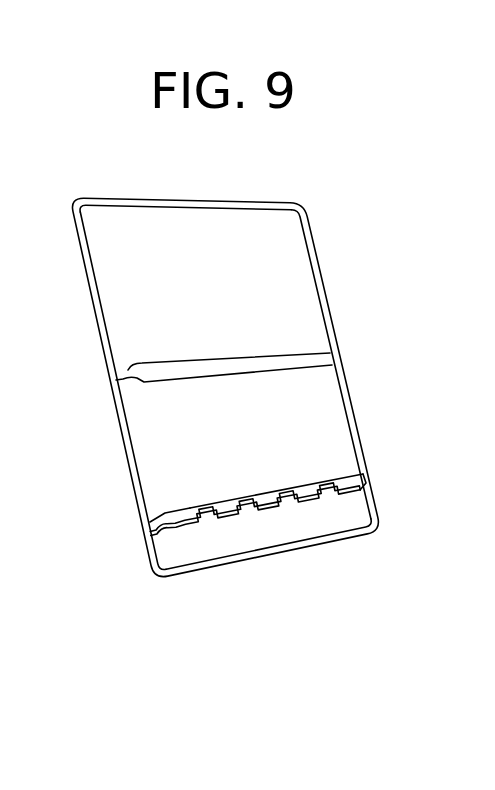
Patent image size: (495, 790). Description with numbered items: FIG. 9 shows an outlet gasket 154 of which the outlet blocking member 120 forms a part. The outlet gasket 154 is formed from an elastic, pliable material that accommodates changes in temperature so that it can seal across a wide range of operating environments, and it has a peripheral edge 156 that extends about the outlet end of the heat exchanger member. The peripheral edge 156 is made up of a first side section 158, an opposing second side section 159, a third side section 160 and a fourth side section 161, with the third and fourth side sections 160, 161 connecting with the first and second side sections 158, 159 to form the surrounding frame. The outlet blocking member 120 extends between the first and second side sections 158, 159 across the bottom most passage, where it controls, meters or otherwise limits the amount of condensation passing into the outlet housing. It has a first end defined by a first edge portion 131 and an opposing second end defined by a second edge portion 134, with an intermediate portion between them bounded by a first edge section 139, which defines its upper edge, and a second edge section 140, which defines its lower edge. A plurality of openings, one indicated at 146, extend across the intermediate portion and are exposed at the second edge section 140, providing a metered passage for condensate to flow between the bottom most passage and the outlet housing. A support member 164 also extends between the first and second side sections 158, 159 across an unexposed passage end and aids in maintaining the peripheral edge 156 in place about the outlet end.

The outlet gasket 154 is at (262, 394).
The peripheral edge 156 is at (348, 360).
The first side section 158 is at (105, 322).
The second side section 159 is at (323, 317).
The third side section 160 is at (178, 208).
The support member 164 is at (220, 377).
The outlet blocking member 120 is at (253, 516).
The first edge portion 131 is at (165, 514).
The first edge section 139 is at (273, 490).
The second edge portion 134 is at (353, 482).
The second edge section 140 is at (318, 506).
The opening 146 is at (250, 522).
The fourth side section 161 is at (318, 541).